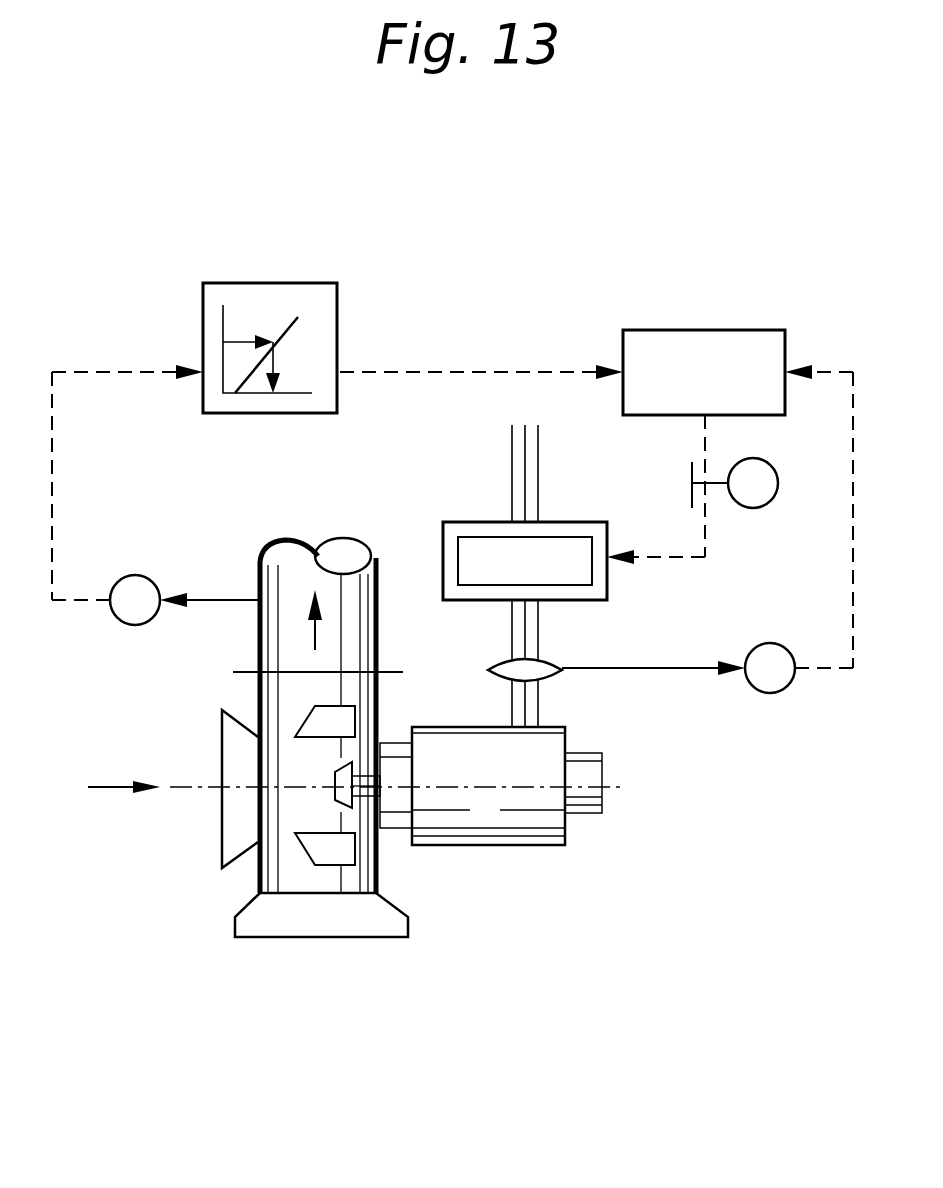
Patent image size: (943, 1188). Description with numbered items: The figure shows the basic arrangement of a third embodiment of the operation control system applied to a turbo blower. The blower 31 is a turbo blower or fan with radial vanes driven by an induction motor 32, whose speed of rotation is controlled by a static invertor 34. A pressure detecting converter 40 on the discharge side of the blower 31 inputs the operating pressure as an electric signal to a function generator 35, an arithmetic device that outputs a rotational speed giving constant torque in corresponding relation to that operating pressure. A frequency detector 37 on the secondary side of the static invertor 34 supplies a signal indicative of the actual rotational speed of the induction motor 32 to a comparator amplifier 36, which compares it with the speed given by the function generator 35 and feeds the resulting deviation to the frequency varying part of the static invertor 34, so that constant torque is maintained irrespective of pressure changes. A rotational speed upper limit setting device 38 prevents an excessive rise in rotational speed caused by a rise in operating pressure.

The blower 31 is at (320, 938).
The induction motor 32 is at (500, 847).
The static invertor 34 is at (472, 522).
The function generator 35 is at (283, 284).
The comparator amplifier 36 is at (720, 330).
The frequency detector 37 is at (770, 694).
The rotational speed upper limit setting device 38 is at (757, 510).
The pressure detecting converter 40 is at (110, 625).